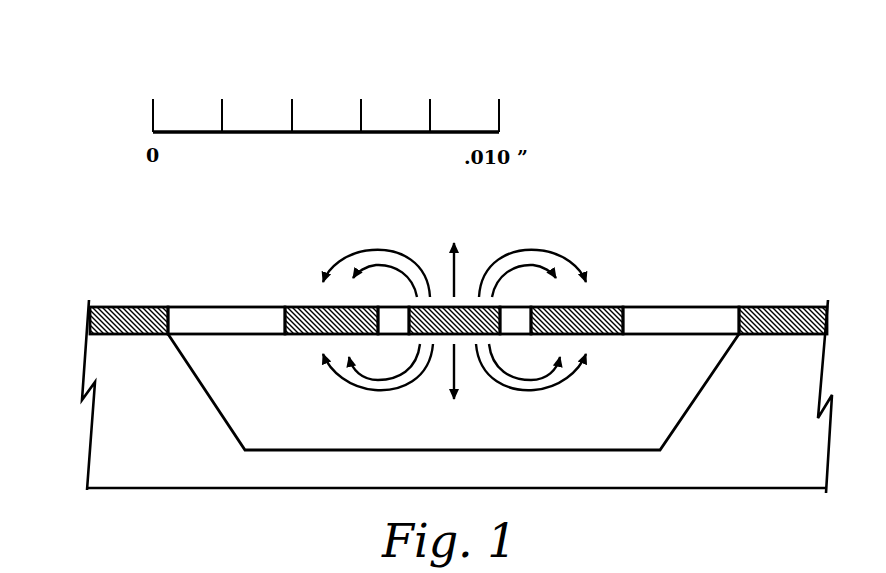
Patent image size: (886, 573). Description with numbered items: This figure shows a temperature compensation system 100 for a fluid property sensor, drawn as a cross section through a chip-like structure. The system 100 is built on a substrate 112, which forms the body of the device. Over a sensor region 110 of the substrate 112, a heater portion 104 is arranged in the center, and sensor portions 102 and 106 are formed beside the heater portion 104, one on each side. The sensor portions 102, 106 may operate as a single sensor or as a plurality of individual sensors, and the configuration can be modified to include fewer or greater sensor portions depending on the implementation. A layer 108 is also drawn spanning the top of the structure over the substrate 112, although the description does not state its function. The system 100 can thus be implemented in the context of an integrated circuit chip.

The temperature compensation system 100 is at (86, 91).
The sensor portion 102 is at (300, 306).
The heater portion 104 is at (445, 306).
The sensor portion 106 is at (612, 306).
The membrane layer 108 is at (121, 306).
The sensor region 110 is at (300, 430).
The substrate 112 is at (184, 453).